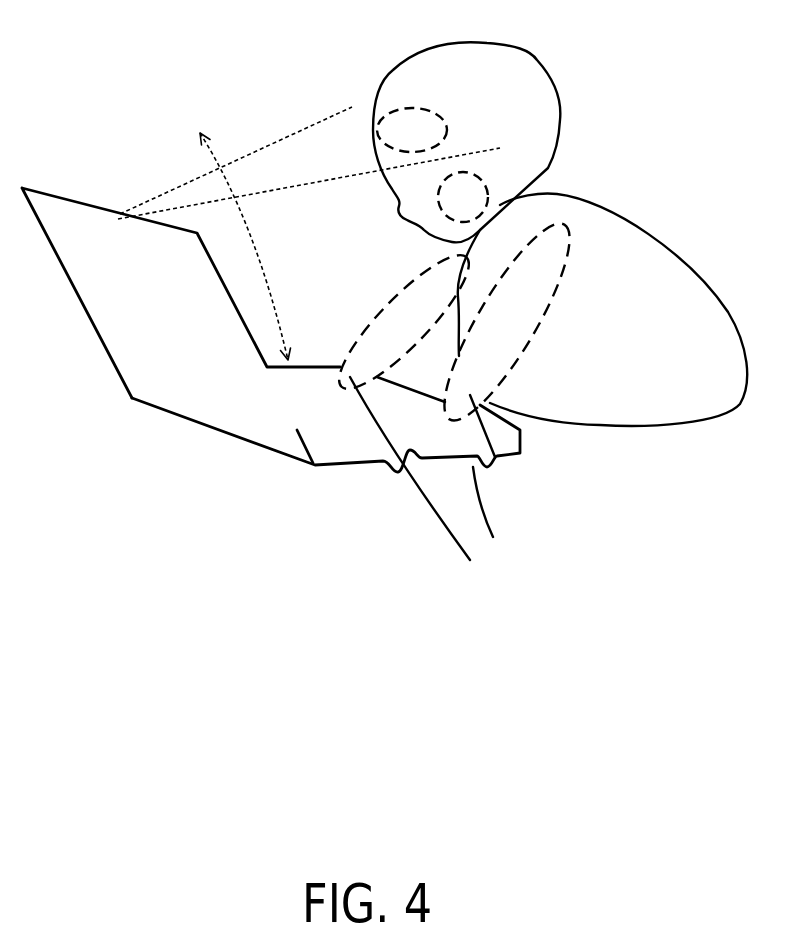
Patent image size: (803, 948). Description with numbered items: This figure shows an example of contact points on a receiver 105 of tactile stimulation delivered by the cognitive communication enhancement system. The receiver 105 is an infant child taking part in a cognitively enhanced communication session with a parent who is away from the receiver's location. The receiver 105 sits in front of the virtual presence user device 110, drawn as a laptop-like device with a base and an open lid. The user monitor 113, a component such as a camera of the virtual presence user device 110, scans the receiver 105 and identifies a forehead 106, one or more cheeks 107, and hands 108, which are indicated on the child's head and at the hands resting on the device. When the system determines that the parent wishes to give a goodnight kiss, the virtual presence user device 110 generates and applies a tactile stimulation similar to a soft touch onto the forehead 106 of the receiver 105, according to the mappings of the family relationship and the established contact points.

The receiver 105 is at (673, 352).
The forehead 106 is at (437, 130).
The cheek 107 is at (463, 193).
The hands 108 is at (432, 473).
The virtual presence user device 110 is at (302, 407).
The user monitor 113 is at (142, 250).